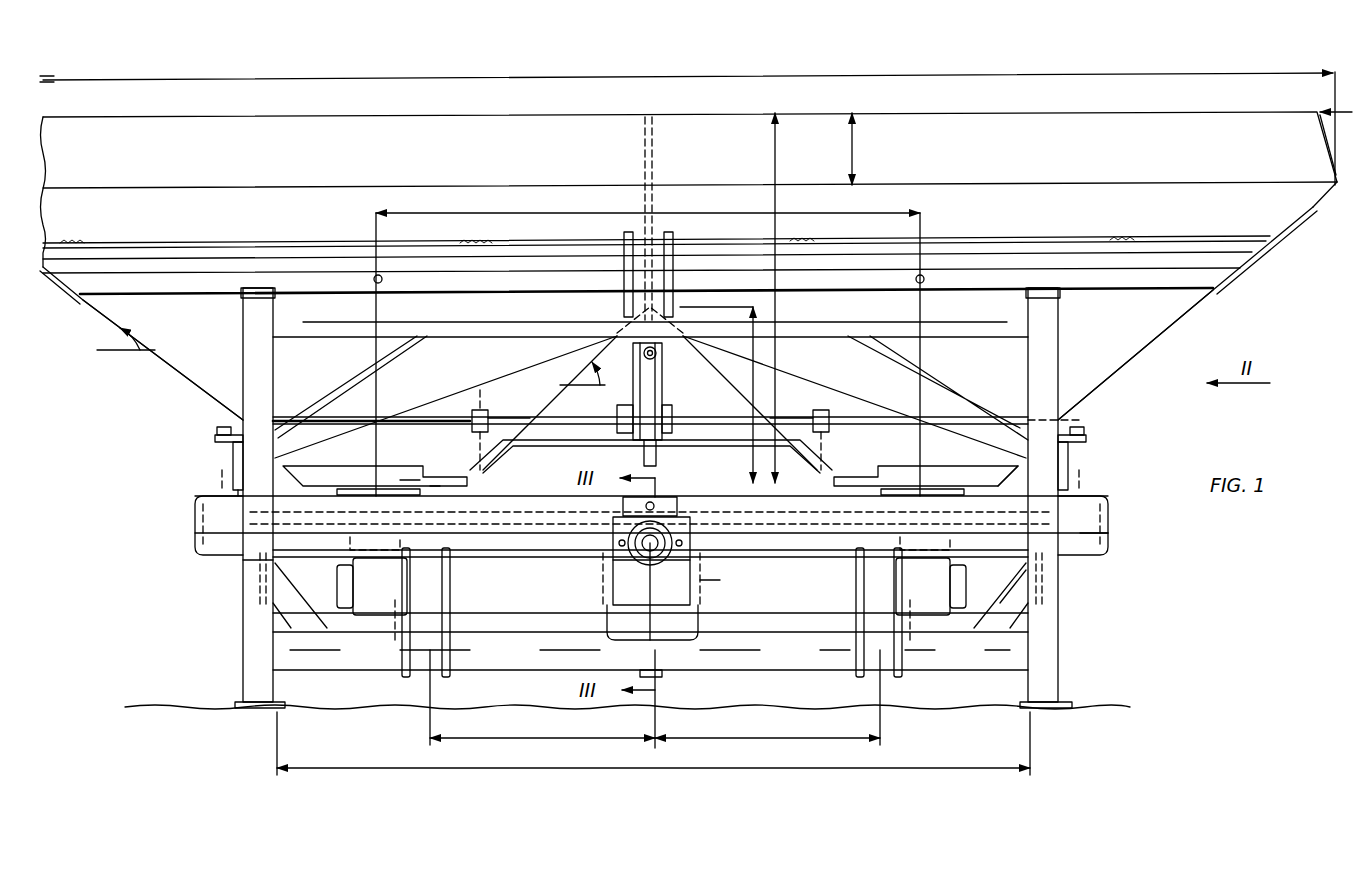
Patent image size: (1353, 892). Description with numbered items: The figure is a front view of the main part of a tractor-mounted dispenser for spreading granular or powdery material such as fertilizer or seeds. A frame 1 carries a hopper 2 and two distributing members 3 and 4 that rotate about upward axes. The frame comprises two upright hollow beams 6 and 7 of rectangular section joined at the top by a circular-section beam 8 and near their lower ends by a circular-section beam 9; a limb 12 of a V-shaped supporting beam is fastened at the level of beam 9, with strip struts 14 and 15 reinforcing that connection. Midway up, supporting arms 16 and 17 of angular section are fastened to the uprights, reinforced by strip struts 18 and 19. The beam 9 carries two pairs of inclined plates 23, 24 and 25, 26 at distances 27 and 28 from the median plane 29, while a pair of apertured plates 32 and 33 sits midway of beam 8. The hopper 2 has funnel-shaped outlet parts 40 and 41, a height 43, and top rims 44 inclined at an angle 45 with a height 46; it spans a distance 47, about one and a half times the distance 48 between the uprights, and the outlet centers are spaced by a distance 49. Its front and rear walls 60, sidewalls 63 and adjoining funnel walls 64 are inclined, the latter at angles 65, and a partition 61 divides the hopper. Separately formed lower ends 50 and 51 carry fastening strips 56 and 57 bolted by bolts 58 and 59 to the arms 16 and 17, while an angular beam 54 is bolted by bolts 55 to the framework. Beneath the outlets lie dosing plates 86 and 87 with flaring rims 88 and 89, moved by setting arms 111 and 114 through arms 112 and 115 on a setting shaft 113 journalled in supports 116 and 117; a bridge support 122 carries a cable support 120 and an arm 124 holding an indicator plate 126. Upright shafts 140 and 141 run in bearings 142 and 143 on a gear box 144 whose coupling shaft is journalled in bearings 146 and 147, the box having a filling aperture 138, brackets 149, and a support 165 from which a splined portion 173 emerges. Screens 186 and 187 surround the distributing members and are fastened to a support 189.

The frame 1 is at (240, 575).
The hopper 2 is at (236, 103).
The distributing member 3 is at (508, 518).
The distributing member 4 is at (1112, 520).
The hollow beam 6 is at (243, 359).
The hollow beam 7 is at (1058, 352).
The circular-section beam 8 is at (468, 295).
The circular-section beam 9 is at (512, 671).
The limb 12 is at (665, 383).
The strip strut 14 is at (262, 600).
The strip strut 15 is at (1013, 589).
The supporting arm 16 is at (233, 472).
The supporting arm 17 is at (1068, 468).
The strip strut 18 is at (368, 378).
The strip strut 19 is at (938, 390).
The inclined plate 23 is at (401, 677).
The inclined plate 24 is at (448, 582).
The inclined plate 25 is at (848, 583).
The inclined plate 26 is at (901, 678).
The distance 27 is at (542, 697).
The distance 28 is at (767, 697).
The median plane 29 is at (676, 699).
The plate 32 is at (622, 257).
The plate 33 is at (675, 262).
The funnel-shaped outlet part 40 is at (166, 362).
The funnel-shaped outlet part 41 is at (1132, 352).
The height 43 is at (779, 357).
The rim 44 is at (1325, 136).
The angle 45 is at (1316, 108).
The height 46 is at (857, 149).
The distance 47 is at (687, 114).
The distance 48 is at (653, 743).
The distance 49 is at (648, 342).
The lower end 50 is at (392, 422).
The lower end 51 is at (895, 426).
The angular cross-section beam 54 is at (225, 254).
The bolt 55 is at (380, 276).
The fastening strip 56 is at (215, 437).
The fastening strip 57 is at (1084, 432).
The bolt 58 is at (233, 450).
The bolt 59 is at (1070, 446).
The front and rear wall 60 is at (1090, 290).
The partition 61 is at (640, 137).
The sidewall 63 is at (1180, 320).
The funnel wall 64 is at (593, 360).
The angle 65 is at (100, 342).
The dosing plate 86 is at (316, 478).
The dosing plate 87 is at (965, 476).
The flaring rim 88 is at (410, 472).
The flaring rim 89 is at (878, 470).
The setting arm 111 is at (533, 472).
The arm 112 is at (468, 460).
The setting shaft 113 is at (548, 408).
The setting arm 114 is at (796, 500).
The arm 115 is at (826, 440).
The support 116 is at (480, 402).
The support 117 is at (826, 410).
The support 120 is at (664, 400).
The bridge support 122 is at (578, 447).
The arm 124 is at (618, 410).
The indicator plate 126 is at (652, 458).
The filling aperture 138 is at (722, 568).
The upright shaft 140 is at (352, 543).
The upright shaft 141 is at (880, 500).
The bearing 142 is at (372, 586).
The bearing 143 is at (931, 586).
The gear box 144 is at (823, 622).
The bearing 146 is at (322, 580).
The bearing 147 is at (968, 592).
The bracket 149 is at (396, 626).
The support 165 is at (612, 598).
The splined portion 173 is at (611, 578).
The screen 186 is at (193, 517).
The screen 187 is at (1110, 541).
The support 189 is at (679, 492).